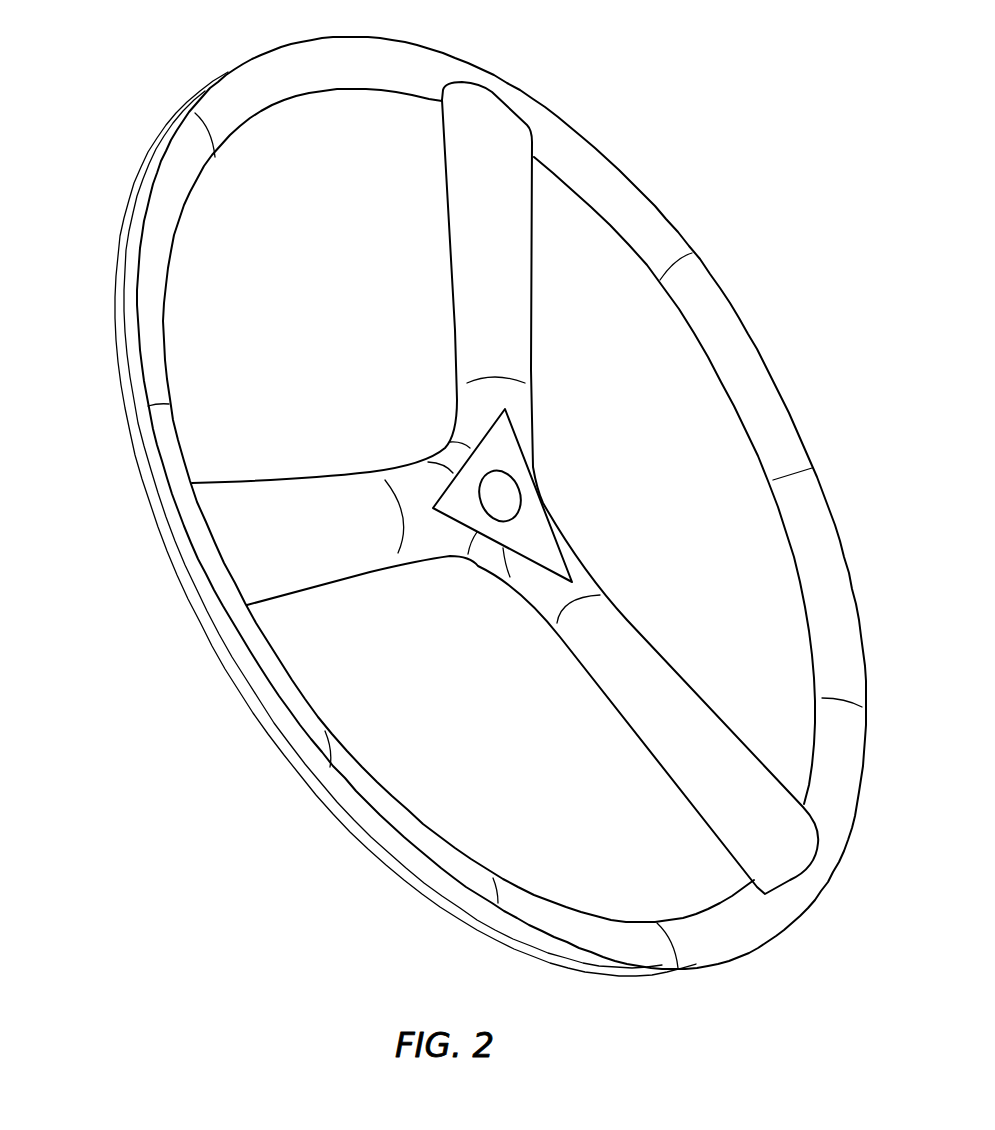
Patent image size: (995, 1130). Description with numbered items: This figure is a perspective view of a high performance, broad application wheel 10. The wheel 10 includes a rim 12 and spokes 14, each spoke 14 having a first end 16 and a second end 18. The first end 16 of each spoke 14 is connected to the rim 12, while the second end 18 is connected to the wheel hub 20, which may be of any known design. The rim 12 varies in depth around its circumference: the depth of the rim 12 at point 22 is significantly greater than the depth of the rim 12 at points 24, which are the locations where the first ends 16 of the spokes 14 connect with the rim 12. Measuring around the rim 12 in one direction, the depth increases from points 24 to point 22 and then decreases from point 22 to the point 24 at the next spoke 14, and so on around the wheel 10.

The wheel 10 is at (240, 838).
The rim 12 is at (115, 340).
The spokes 14 is at (495, 292).
The first end 16 is at (442, 143).
The second end 18 is at (447, 442).
The wheel hub 20 is at (500, 497).
The point 22 is at (202, 87).
The points 24 is at (490, 73).